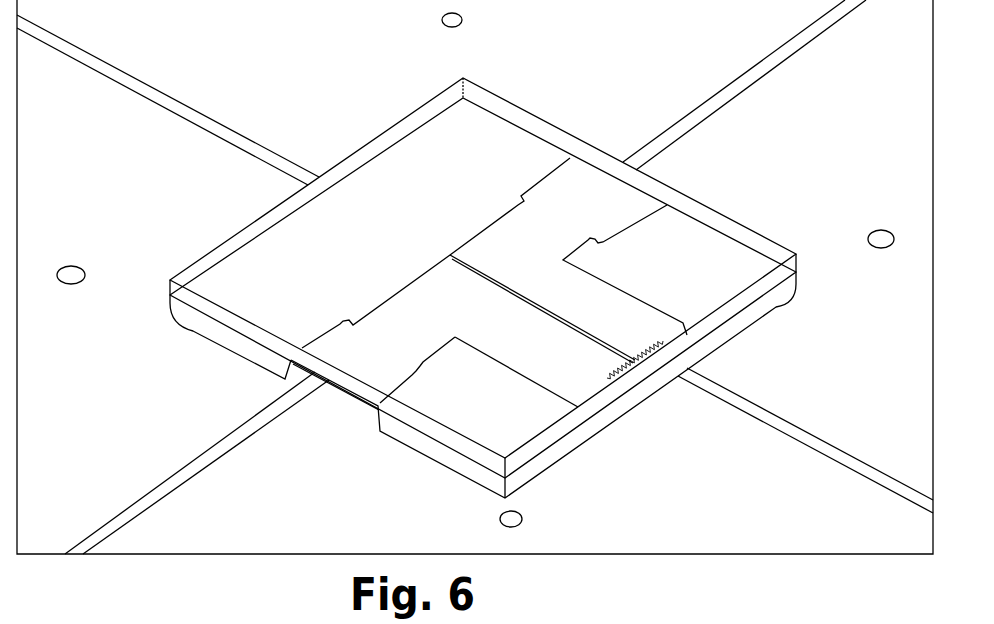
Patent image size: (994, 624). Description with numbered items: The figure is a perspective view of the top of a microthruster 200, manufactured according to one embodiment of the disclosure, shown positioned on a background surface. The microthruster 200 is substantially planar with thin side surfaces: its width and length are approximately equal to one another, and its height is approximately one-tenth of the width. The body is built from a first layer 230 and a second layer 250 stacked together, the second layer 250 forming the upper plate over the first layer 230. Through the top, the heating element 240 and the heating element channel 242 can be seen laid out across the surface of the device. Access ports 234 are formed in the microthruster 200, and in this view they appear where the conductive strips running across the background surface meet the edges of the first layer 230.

The microthruster 200 is at (217, 80).
The first layer 230 is at (248, 350).
The access ports 234 is at (634, 153).
The heating element 240 is at (461, 313).
The heating element channel 242 is at (493, 278).
The second layer 250 is at (730, 222).